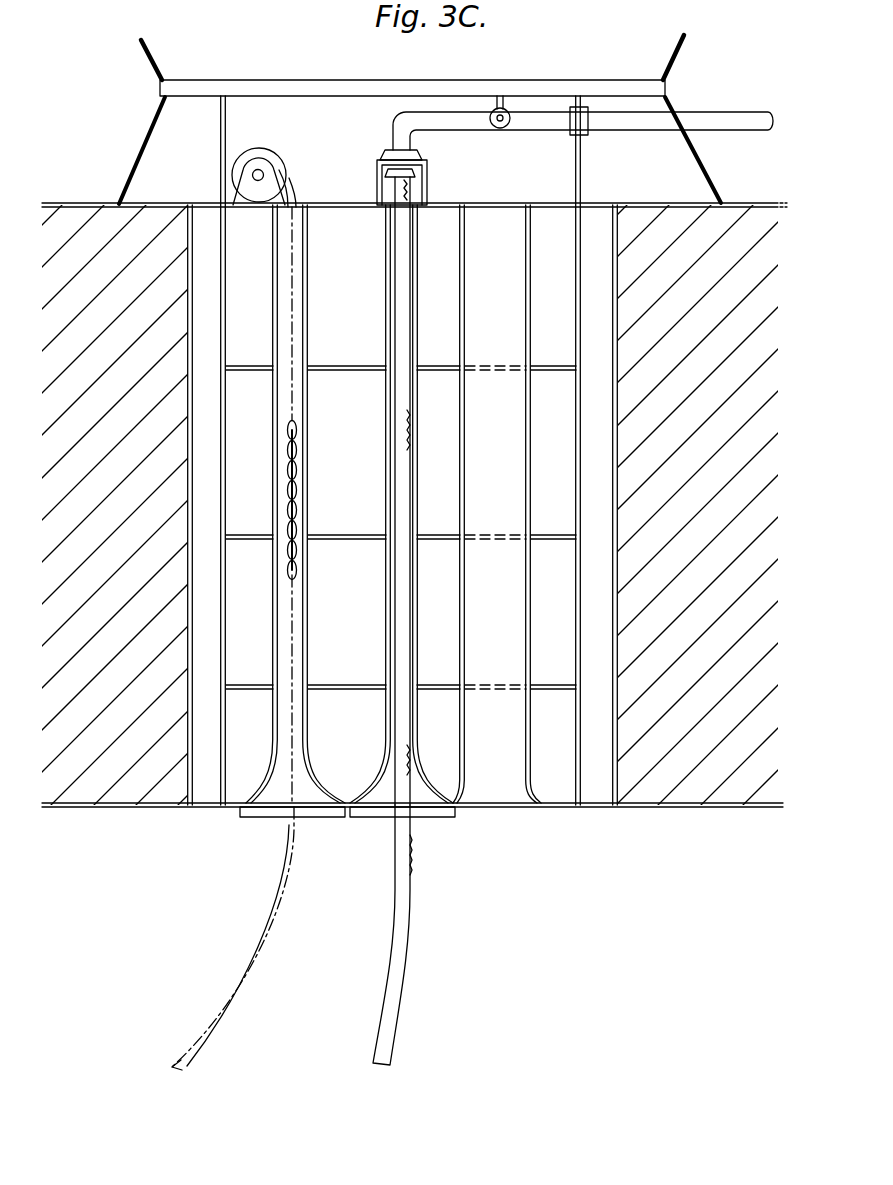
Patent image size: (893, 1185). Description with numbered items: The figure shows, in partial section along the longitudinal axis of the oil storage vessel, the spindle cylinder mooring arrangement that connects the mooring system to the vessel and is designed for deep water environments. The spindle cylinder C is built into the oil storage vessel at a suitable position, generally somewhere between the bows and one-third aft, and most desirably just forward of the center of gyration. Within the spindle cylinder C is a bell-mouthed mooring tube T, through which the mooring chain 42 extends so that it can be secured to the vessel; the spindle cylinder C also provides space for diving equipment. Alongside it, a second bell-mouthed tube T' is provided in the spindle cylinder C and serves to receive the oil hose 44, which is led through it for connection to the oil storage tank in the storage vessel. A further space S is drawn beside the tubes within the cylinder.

The mooring chain 42 is at (228, 1022).
The oil hose 44 is at (407, 943).
The spindle cylinder C is at (226, 778).
The bell-mouthed mooring tube T is at (286, 525).
The bell-mouthed tube T' is at (402, 525).
The sleeve S is at (498, 783).